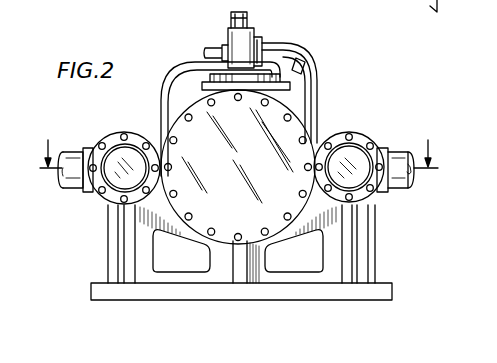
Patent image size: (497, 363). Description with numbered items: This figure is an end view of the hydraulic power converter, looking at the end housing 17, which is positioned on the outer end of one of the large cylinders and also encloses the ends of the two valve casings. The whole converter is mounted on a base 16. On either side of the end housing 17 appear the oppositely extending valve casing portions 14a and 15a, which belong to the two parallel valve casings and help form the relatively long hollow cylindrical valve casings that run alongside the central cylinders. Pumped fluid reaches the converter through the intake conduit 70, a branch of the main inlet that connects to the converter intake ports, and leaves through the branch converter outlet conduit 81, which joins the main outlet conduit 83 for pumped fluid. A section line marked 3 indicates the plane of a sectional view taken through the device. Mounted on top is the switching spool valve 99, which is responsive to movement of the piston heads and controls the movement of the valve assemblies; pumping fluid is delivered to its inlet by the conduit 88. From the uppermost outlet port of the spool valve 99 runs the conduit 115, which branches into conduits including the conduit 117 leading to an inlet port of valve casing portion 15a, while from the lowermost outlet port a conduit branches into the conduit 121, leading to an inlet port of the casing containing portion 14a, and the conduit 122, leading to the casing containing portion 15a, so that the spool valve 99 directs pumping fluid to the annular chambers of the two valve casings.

The section line 3- 3 is at (239, 146).
The valve casing portion 14a is at (110, 135).
The valve casing portion 15a is at (358, 136).
The base 16 is at (240, 302).
The end housing 17 is at (197, 236).
The intake conduit 70 is at (79, 190).
The converter outlet conduit 81 is at (405, 192).
The main outlet conduit 83 is at (437, 10).
The conduit 88 is at (212, 48).
The switching spool valve 99 is at (258, 34).
The conduit 115 is at (285, 40).
The conduit 117 is at (317, 115).
The conduit 121 is at (163, 108).
The conduit 122 is at (304, 62).